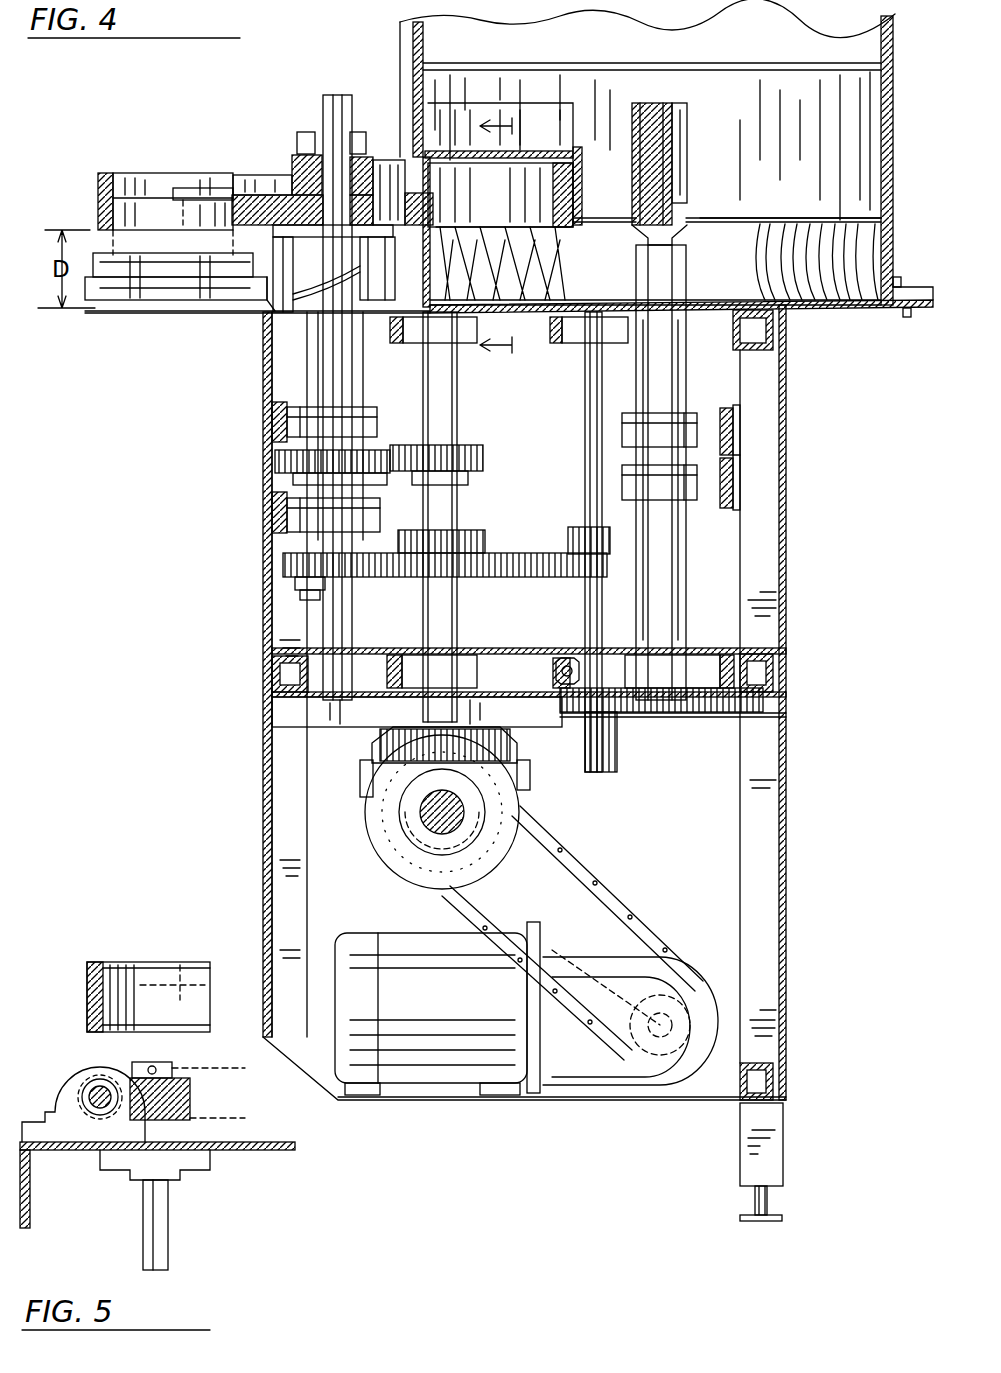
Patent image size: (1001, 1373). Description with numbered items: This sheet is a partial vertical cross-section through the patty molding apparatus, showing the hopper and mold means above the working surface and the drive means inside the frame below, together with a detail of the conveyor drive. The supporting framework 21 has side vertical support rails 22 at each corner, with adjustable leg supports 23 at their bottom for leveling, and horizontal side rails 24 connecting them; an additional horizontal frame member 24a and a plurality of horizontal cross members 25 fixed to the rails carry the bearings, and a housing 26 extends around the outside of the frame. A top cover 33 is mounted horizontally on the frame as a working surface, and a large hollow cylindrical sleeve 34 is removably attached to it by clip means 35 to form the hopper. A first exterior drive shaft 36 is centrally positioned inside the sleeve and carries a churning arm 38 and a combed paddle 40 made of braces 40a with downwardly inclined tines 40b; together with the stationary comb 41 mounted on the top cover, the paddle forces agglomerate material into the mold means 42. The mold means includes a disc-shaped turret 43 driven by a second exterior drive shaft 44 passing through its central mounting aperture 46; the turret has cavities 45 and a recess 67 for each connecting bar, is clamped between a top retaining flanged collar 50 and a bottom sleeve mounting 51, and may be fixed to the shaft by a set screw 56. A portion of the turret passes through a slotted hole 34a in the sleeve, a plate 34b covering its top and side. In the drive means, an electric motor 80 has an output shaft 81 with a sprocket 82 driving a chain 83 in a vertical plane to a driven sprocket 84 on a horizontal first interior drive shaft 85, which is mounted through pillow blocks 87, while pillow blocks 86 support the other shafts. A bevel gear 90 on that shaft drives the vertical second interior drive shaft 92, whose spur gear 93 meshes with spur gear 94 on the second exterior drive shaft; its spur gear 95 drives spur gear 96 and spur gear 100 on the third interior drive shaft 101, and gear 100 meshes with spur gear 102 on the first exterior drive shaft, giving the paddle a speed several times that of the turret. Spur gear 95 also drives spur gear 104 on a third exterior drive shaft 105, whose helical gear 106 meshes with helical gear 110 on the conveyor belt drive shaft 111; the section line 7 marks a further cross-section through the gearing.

In FIG. 4, the supporting framework 21 is at (790, 850).
In FIG. 4, the side vertical support rails 22 is at (760, 458).
In FIG. 4, the adjustable leg supports 23 is at (770, 1221).
In FIG. 4, the horizontal side rails 24 is at (775, 338).
In FIG. 4, the additional horizontal frame member 24a is at (300, 713).
In FIG. 4, the horizontal cross members 25 is at (272, 420).
In FIG. 4, the housing 26 is at (268, 505).
In FIG. 4, the top cover 33 is at (845, 308).
In FIG. 4, the cylindrical sleeve 34 is at (893, 175).
In FIG. 4, the slotted hole 34a is at (415, 160).
In FIG. 4, the plate 34b is at (548, 151).
In FIG. 4, the clip means 35 is at (902, 295).
In FIG. 4, the first exterior drive shaft 36 is at (672, 305).
In FIG. 4, the churning arm 38 is at (598, 130).
In FIG. 4, the combed paddle 40 is at (708, 210).
In FIG. 4, the braces 40a is at (740, 222).
In FIG. 4, the tines 40b is at (760, 285).
In FIG. 4, the stationary comb 41 is at (550, 275).
In FIG. 4, the mold means 42 is at (165, 140).
In FIG. 4, the turret 43 is at (245, 178).
In FIG. 5, the turret 43 is at (104, 952).
In FIG. 4, the second exterior drive shaft 44 is at (335, 100).
In FIG. 4, the cavities 45 is at (230, 185).
In FIG. 4, the central mounting aperture 46 is at (360, 180).
In FIG. 4, the top retaining flanged collar 50 is at (355, 160).
In FIG. 4, the bottom sleeve mounting 51 is at (397, 258).
In FIG. 5, the set screw 56 is at (132, 980).
In FIG. 4, the recess 67 is at (440, 170).
In FIG. 4, the section line 7 is at (506, 240).
In FIG. 4, the electric motor 80 is at (410, 1085).
In FIG. 4, the output shaft 81 is at (645, 1035).
In FIG. 4, the sprocket 82 is at (672, 993).
In FIG. 4, the chain 83 is at (605, 905).
In FIG. 4, the driven sprocket 84 is at (535, 815).
In FIG. 4, the first interior drive shaft 85 is at (420, 820).
In FIG. 4, the pillow blocks 86 is at (368, 420).
In FIG. 4, the pillow blocks 87 is at (470, 343).
In FIG. 4, the bevel gear 90 is at (392, 875).
In FIG. 4, the second interior drive shaft 92 is at (458, 590).
In FIG. 4, the spur gear 93 is at (470, 455).
In FIG. 4, the spur gear 94 is at (378, 452).
In FIG. 4, the spur gear 95 is at (495, 553).
In FIG. 4, the spur gear 96 is at (568, 548).
In FIG. 4, the spur gear 100 is at (580, 722).
In FIG. 4, the third interior drive shaft 101 is at (586, 430).
In FIG. 4, the spur gear 102 is at (765, 705).
In FIG. 4, the spur gear 104 is at (285, 563).
In FIG. 4, the third exterior drive shaft 105 is at (325, 592).
In FIG. 5, the third exterior drive shaft 105 is at (168, 1235).
In FIG. 5, the helical gear 106 is at (180, 1092).
In FIG. 5, the helical gear 110 is at (100, 1085).
In FIG. 5, the conveyor belt drive shaft 111 is at (85, 1098).